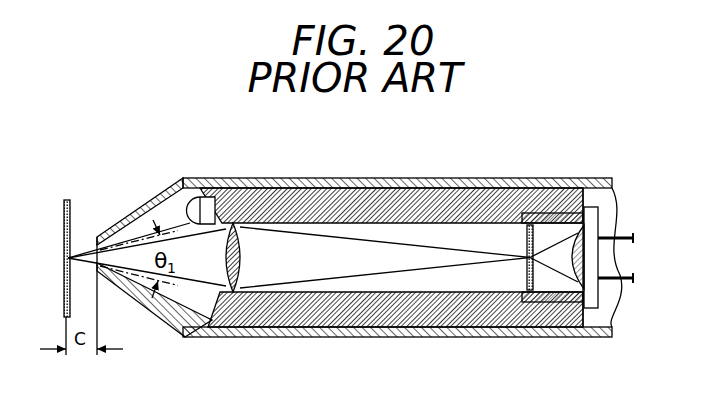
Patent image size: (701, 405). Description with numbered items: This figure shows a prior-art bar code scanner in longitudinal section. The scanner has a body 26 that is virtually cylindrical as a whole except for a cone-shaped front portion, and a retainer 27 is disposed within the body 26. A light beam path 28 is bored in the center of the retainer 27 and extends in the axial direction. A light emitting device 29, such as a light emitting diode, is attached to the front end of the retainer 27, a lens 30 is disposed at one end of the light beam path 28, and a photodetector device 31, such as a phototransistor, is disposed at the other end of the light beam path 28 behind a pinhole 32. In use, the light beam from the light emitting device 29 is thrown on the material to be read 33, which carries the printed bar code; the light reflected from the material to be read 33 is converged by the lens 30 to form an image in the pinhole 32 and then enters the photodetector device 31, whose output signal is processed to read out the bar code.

The body 26 is at (306, 183).
The retainer 27 is at (375, 202).
The light beam path 28 is at (445, 230).
The light emitting device 29 is at (199, 199).
The lens 30 is at (233, 224).
The photodetector device 31 is at (590, 232).
The pinhole 32 is at (524, 252).
The material to be read 33 is at (72, 203).